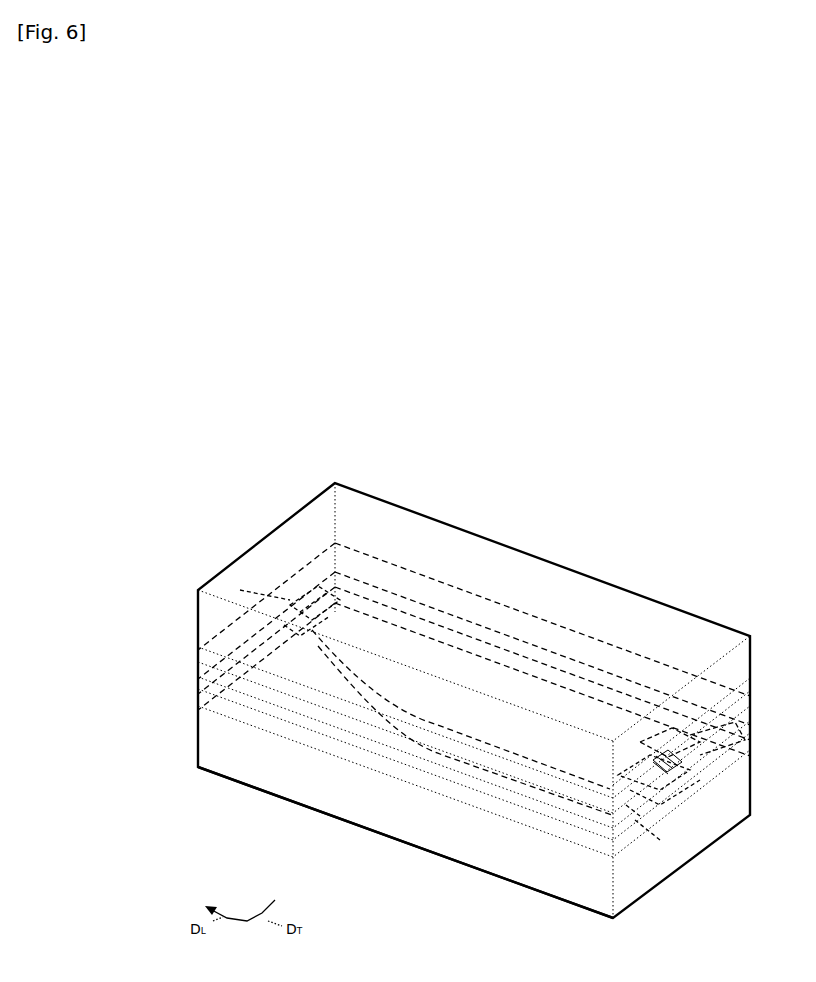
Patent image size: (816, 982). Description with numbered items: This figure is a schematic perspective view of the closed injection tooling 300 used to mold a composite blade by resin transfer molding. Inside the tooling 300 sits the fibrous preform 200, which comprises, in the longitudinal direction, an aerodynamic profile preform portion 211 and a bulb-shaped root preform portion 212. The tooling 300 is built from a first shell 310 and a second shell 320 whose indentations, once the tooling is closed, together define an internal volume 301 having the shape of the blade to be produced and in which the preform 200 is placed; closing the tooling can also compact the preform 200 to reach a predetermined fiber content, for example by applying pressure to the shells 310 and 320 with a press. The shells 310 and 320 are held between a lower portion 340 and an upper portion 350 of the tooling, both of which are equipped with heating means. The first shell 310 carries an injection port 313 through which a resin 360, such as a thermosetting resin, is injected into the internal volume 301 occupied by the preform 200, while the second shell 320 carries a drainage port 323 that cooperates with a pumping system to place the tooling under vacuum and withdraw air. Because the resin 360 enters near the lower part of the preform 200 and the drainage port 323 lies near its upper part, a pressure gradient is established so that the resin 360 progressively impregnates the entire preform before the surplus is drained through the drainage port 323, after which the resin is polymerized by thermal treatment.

The fibrous preform 200 is at (500, 647).
The aerodynamic profile preform portion 211 is at (432, 663).
The bulb-shaped root preform portion 212 is at (738, 757).
The injection tooling 300 is at (427, 714).
The internal volume 301 is at (362, 740).
The first shell 310 is at (198, 694).
The injection port 313 is at (652, 804).
The second shell 320 is at (198, 660).
The drainage port 323 is at (308, 598).
The lower portion 340 is at (727, 800).
The upper portion 350 is at (716, 623).
The resin 360 is at (661, 806).